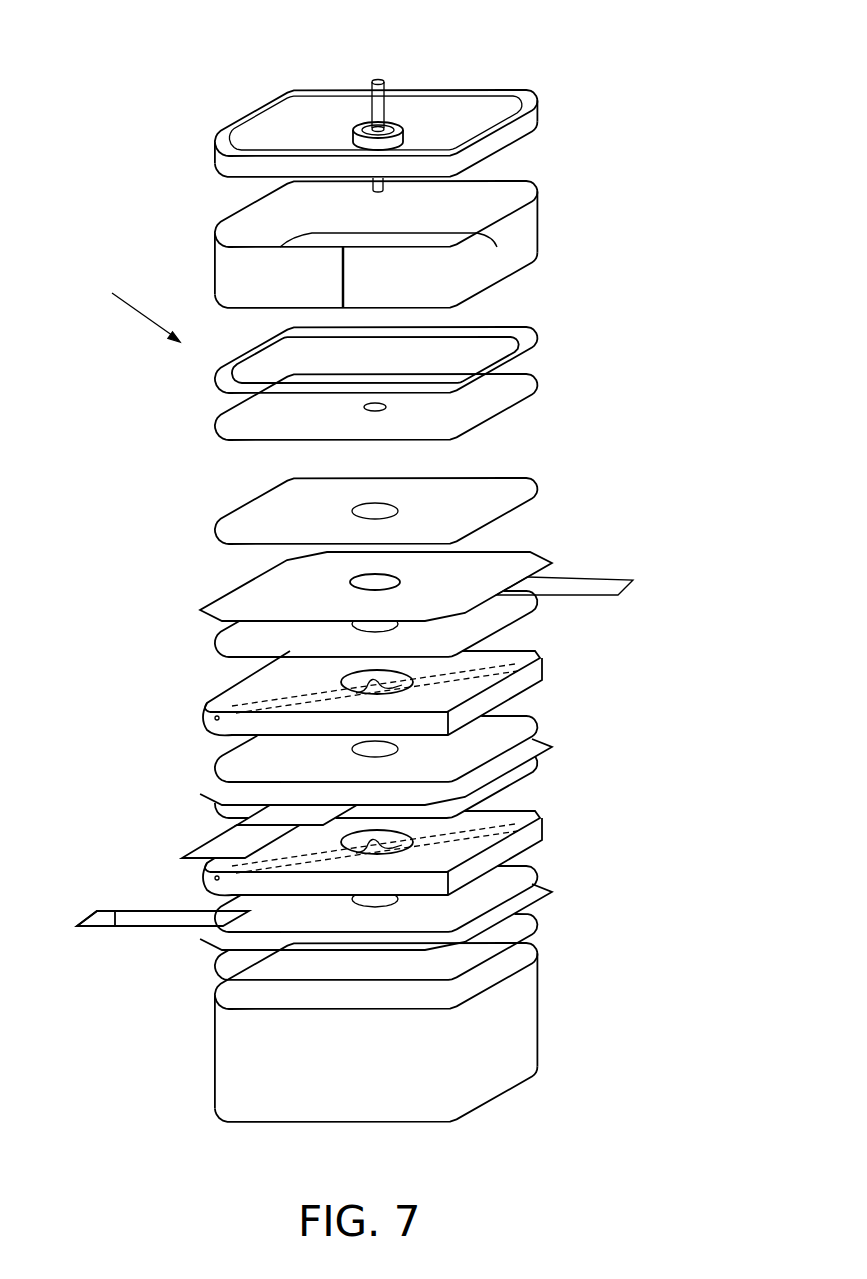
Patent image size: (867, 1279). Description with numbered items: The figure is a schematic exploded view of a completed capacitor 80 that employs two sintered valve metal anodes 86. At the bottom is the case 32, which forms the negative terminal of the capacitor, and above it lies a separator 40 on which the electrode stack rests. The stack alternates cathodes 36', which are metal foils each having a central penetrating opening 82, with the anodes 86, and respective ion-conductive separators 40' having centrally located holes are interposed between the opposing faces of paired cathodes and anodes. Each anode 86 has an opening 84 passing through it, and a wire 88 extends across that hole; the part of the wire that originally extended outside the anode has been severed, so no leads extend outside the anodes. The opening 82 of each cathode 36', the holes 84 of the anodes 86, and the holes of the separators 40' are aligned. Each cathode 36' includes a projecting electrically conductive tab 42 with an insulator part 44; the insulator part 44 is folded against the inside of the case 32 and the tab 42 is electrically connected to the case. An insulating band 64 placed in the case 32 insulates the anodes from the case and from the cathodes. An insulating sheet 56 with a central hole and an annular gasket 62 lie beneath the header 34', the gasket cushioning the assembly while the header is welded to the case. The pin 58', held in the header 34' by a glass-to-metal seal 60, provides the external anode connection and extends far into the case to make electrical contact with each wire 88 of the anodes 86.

The capacitor 80 is at (129, 311).
The header 34' is at (448, 117).
The pin 58' is at (433, 75).
The glass-to-metal seal 60 is at (392, 127).
The insulating band 64 is at (538, 215).
The annular gasket 62 is at (538, 350).
The insulating sheet 56 is at (538, 385).
The separator 40' is at (470, 636).
The cathode 36' is at (461, 754).
The opening 82 is at (352, 582).
The anode 86 is at (546, 662).
The opening 84 is at (340, 682).
The wire 88 is at (520, 670).
The insulator part 44 is at (223, 813).
The tab 42 is at (217, 850).
The separator 40 is at (444, 964).
The case 32 is at (533, 1072).